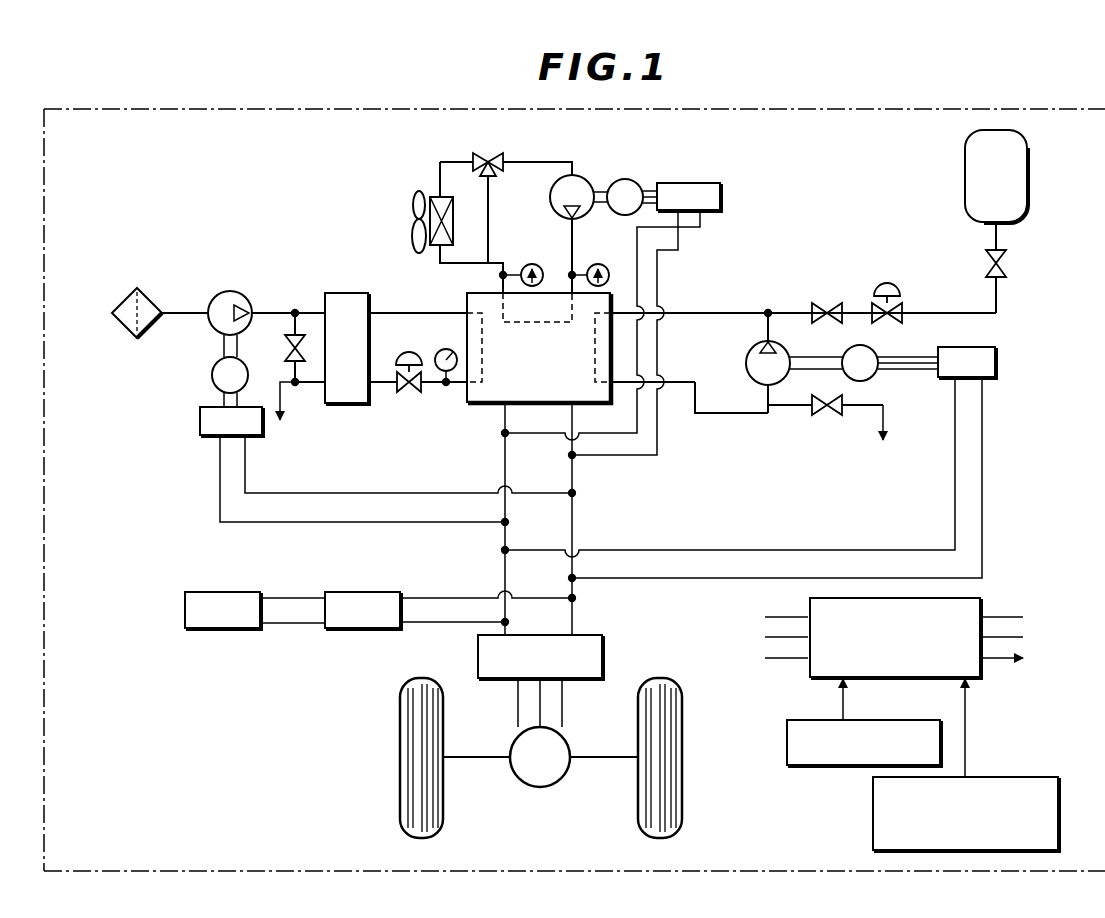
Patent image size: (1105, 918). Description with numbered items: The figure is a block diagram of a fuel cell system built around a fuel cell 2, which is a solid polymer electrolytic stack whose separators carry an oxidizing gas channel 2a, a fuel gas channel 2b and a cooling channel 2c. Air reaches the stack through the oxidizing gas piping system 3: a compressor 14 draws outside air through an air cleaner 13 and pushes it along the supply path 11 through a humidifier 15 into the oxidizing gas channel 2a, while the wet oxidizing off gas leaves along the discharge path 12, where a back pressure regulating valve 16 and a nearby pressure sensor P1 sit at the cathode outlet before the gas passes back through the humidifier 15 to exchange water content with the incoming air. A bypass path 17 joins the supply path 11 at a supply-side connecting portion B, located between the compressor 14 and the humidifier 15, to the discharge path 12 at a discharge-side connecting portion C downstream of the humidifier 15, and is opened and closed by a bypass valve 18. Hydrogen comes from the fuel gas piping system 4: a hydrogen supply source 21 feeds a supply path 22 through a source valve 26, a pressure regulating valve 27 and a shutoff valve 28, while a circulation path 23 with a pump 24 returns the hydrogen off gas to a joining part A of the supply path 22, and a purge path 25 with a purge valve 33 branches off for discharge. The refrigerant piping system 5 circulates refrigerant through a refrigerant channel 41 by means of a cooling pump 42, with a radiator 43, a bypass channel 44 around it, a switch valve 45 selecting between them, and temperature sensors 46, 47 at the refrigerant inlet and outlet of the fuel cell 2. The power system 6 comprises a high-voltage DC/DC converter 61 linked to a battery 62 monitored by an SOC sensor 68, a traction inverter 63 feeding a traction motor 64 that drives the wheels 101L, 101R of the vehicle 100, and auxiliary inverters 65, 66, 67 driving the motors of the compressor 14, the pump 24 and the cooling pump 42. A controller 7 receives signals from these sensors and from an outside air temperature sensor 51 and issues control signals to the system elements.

The fuel cell 2 is at (538, 364).
The oxidizing gas channel 2a is at (485, 366).
The fuel gas channel 2b is at (593, 340).
The cooling channel 2c is at (533, 326).
The oxidizing gas piping system 3 is at (275, 303).
The fuel gas piping system 4 is at (902, 257).
The refrigerant piping system 5 is at (399, 153).
The power system 6 is at (617, 515).
The controller 7 is at (981, 601).
The supply path 11 is at (394, 313).
The discharge path 12 is at (445, 388).
The air cleaner 13 is at (150, 300).
The compressor 14 is at (230, 291).
The humidifier 15 is at (347, 404).
The back pressure regulating valve 16 is at (409, 393).
The bypass path 17 is at (285, 341).
The bypass valve 18 is at (290, 362).
The hydrogen supply source 21 is at (1030, 162).
The supply path 22 is at (998, 292).
The circulation path 23 is at (740, 413).
The pump 24 is at (746, 358).
The purge path 25 is at (887, 410).
The source valve 26 is at (1006, 260).
The pressure regulating valve 27 is at (902, 305).
The shutoff valve 28 is at (822, 301).
The purge valve 33 is at (828, 416).
The refrigerant channel 41 is at (547, 162).
The cooling pump 42 is at (590, 178).
The radiator 43 is at (413, 205).
The bypass channel 44 is at (490, 218).
The switch valve 45 is at (494, 153).
The temperature sensor 46 is at (601, 263).
The temperature sensor 47 is at (535, 263).
The outside air temperature sensor 51 is at (1000, 777).
The high-voltage DC/DC converter 61 is at (357, 592).
The battery 62 is at (232, 592).
The traction inverter 63 is at (603, 645).
The traction motor 64 is at (568, 745).
The auxiliary inverter 65 is at (200, 426).
The auxiliary inverter 66 is at (996, 362).
The auxiliary inverter 67 is at (721, 197).
The SOC sensor 68 is at (787, 746).
The vehicle 100 is at (467, 775).
The wheel 101R is at (400, 750).
The wheel 101L is at (682, 740).
The joining part A is at (770, 306).
The supply-side connecting portion B is at (296, 309).
The discharge-side connecting portion C is at (296, 392).
The pressure sensor P1 is at (442, 350).